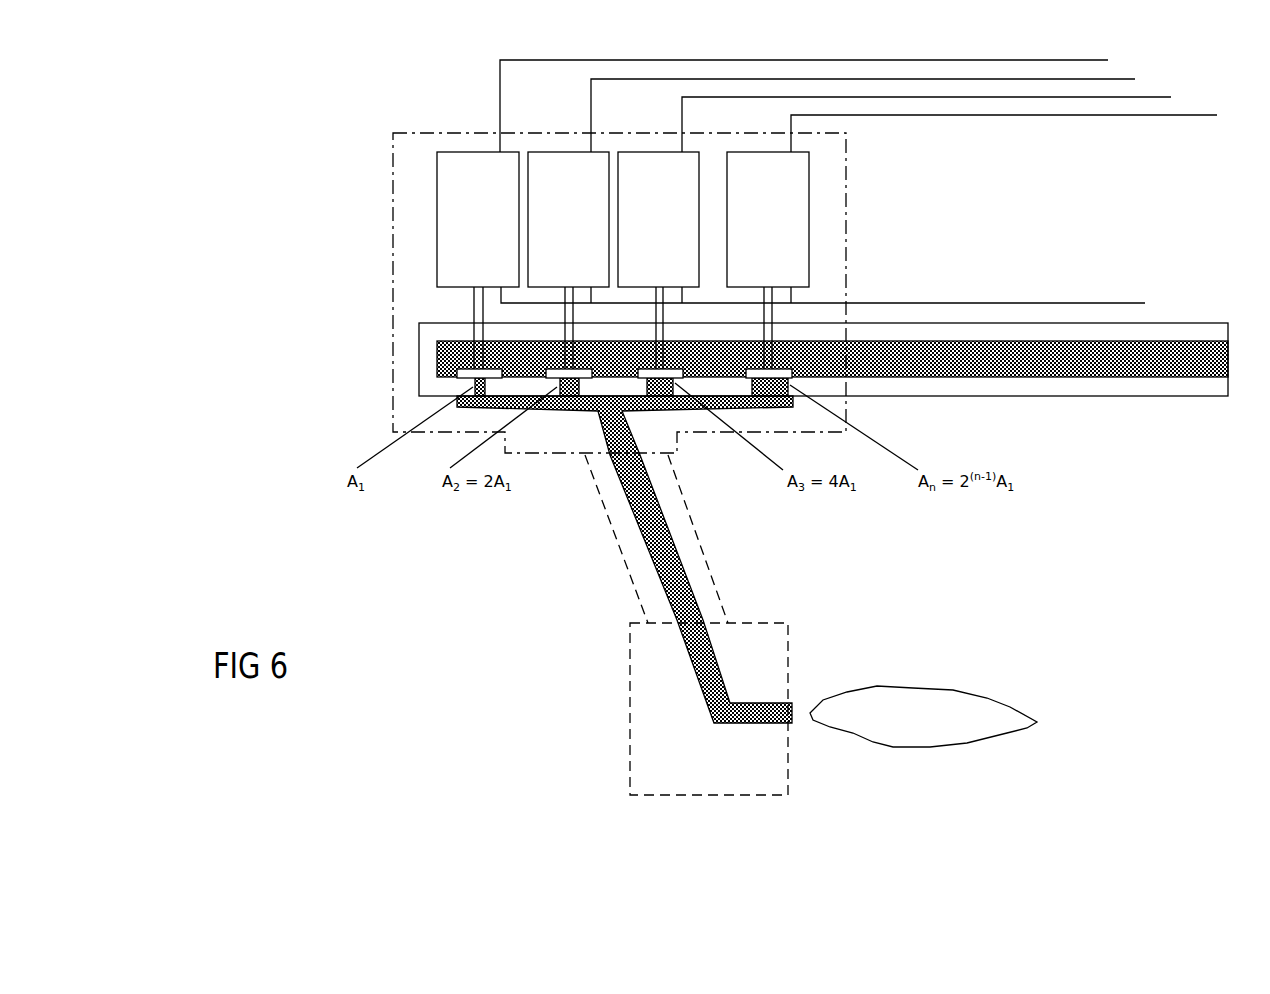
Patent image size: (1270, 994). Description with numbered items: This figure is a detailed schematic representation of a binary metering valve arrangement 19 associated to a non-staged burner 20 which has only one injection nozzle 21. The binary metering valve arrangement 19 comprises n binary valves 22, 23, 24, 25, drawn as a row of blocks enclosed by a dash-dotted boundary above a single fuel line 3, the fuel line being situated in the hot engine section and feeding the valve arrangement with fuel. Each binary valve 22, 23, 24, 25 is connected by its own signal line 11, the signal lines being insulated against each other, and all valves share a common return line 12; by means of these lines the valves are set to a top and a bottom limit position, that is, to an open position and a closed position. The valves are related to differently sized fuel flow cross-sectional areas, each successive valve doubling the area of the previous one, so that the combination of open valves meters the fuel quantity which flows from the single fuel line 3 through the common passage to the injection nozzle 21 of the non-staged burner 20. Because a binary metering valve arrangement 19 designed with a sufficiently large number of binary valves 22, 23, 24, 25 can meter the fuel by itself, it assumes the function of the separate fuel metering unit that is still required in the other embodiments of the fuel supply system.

The single fuel line 3 is at (1122, 362).
The signal lines 11 is at (1080, 60).
The common return line 12 is at (1080, 303).
The binary metering valve arrangement 19 is at (388, 242).
The non-staged burner 20 is at (628, 705).
The injection nozzle 21 is at (793, 710).
The binary valve 22 is at (478, 265).
The binary valve 23 is at (568, 265).
The binary valve 24 is at (658, 265).
The binary valve 25 is at (788, 238).